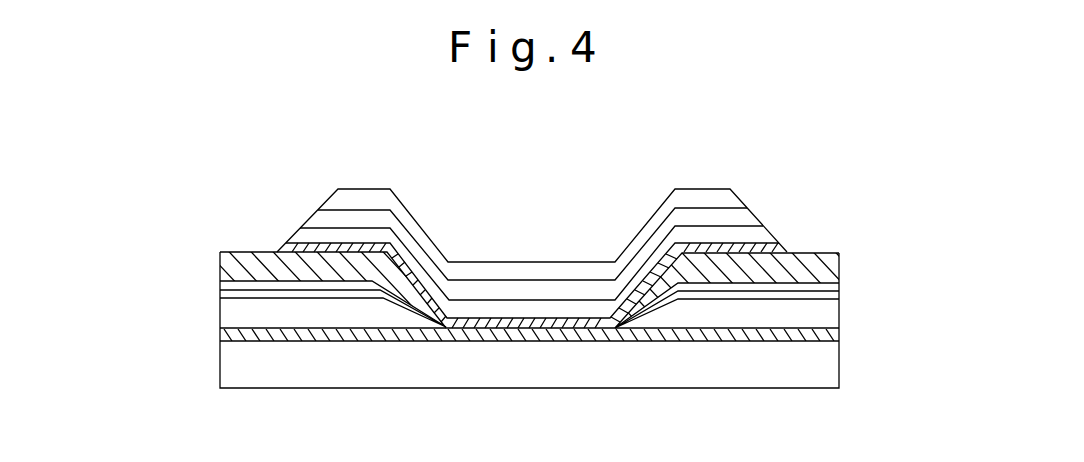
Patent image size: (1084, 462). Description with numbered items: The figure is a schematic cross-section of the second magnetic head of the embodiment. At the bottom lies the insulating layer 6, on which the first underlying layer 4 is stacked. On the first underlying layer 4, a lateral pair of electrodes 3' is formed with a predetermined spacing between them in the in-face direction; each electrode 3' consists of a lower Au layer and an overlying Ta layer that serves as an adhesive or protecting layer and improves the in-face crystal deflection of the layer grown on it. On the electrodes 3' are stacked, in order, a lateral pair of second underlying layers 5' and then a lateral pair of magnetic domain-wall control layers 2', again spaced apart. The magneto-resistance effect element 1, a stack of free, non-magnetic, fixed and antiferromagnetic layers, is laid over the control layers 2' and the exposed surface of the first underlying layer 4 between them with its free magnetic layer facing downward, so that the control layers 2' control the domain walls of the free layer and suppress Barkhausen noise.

The magneto-resistance effect element 1 is at (611, 229).
The magnetic domain-wall control layer 2' is at (522, 288).
The electrode 3' is at (459, 303).
The first underlying layer 4 is at (833, 336).
The second underlying layer 5' is at (762, 308).
The insulating layer 6 is at (828, 372).